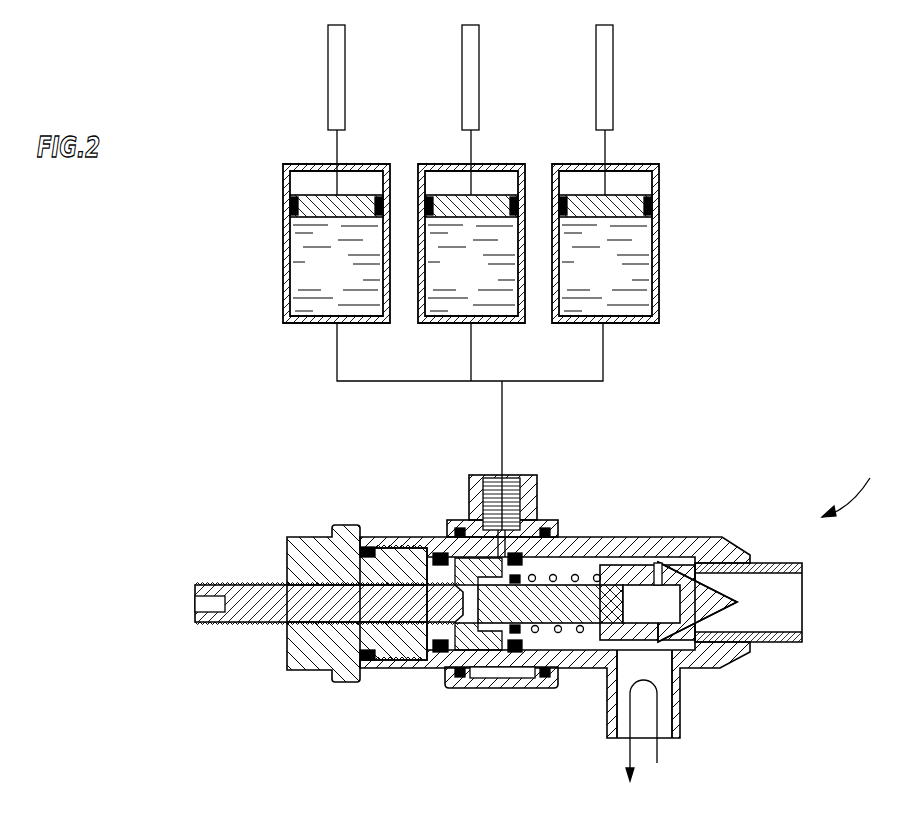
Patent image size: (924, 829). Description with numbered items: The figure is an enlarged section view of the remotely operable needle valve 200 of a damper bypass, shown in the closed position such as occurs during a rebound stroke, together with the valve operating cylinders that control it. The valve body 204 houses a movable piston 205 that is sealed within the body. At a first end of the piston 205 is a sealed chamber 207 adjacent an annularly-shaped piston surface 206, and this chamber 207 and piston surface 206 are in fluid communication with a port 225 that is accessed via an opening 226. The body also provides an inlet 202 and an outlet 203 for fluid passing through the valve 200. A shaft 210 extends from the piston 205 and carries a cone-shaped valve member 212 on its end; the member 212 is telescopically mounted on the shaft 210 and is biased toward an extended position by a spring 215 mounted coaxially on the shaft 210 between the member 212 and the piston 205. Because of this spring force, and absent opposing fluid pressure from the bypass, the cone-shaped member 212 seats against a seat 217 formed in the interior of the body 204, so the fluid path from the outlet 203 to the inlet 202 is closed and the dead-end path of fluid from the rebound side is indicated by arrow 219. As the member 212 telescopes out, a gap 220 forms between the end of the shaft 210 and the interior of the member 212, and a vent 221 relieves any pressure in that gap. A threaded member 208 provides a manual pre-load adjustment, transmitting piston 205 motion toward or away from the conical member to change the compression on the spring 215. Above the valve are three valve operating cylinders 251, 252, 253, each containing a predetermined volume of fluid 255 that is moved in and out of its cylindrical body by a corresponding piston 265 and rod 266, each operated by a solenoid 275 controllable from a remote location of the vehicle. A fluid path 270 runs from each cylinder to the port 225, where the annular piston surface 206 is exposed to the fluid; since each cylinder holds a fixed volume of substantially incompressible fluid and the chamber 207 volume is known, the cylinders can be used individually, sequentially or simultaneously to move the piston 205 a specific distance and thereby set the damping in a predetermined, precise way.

The remotely operable needle valve 200 is at (865, 487).
The inlet 202 is at (797, 580).
The outlet 203 is at (618, 735).
The valve body 204 is at (295, 548).
The piston 205 is at (525, 640).
The annularly-shaped piston surface 206 is at (503, 638).
The sealed chamber 207 is at (480, 558).
The threaded member 208 is at (258, 615).
The shaft 210 is at (555, 597).
The cone-shaped valve member 212 is at (740, 610).
The spring 215 is at (558, 628).
The seat 217 is at (737, 600).
The arrow 219 is at (658, 712).
The gap 220 is at (643, 605).
The vent 221 is at (655, 565).
The port 225 is at (492, 475).
The opening 226 is at (502, 515).
The valve operating cylinder 251 is at (283, 228).
The valve operating cylinder 252 is at (452, 323).
The valve operating cylinder 253 is at (659, 270).
The fluid 255 is at (343, 278).
The piston 265 is at (308, 200).
The rod 266 is at (605, 147).
The fluid path 270 is at (503, 388).
The solenoid 275 is at (333, 65).